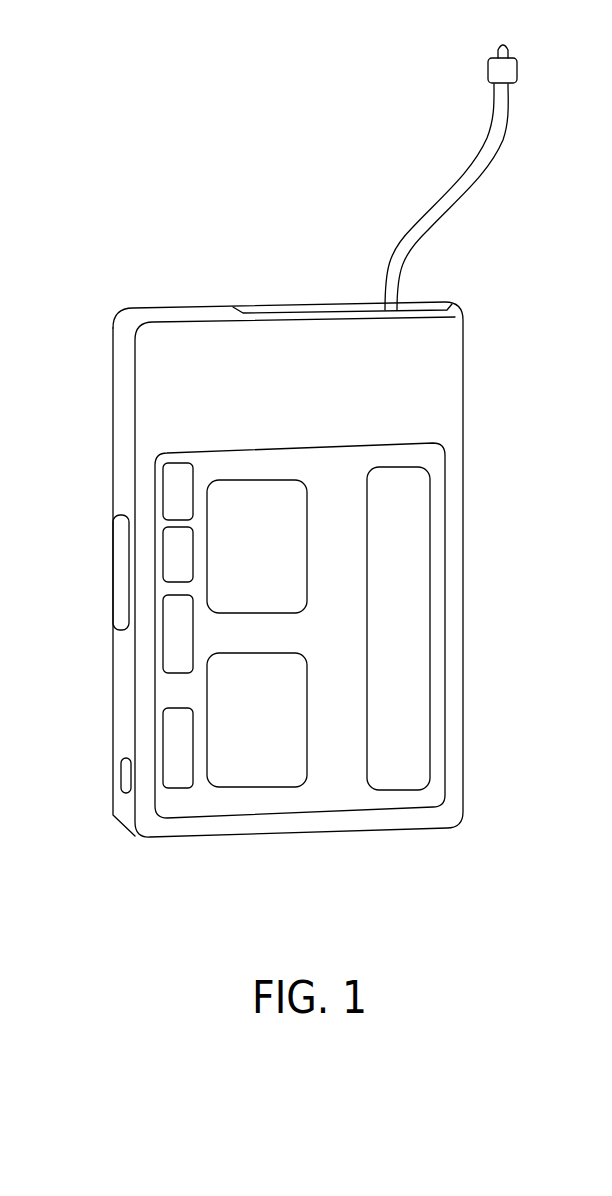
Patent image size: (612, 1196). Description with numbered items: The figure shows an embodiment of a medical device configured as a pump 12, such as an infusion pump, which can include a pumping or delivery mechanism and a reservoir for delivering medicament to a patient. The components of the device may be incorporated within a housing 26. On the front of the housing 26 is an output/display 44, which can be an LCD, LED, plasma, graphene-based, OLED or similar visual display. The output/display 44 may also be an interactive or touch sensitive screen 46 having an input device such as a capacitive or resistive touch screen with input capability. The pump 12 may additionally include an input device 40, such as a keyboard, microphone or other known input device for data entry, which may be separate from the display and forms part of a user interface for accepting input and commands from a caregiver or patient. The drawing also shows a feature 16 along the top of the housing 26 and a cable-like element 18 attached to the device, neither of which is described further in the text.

The pump 12 is at (310, 438).
The top slot / port 16 is at (305, 306).
The lanyard / cable with connector 18 is at (509, 72).
The housing 26 is at (446, 368).
The input device 40 is at (116, 556).
The output/display 44 is at (440, 462).
The touch sensitive screen 46 is at (412, 670).